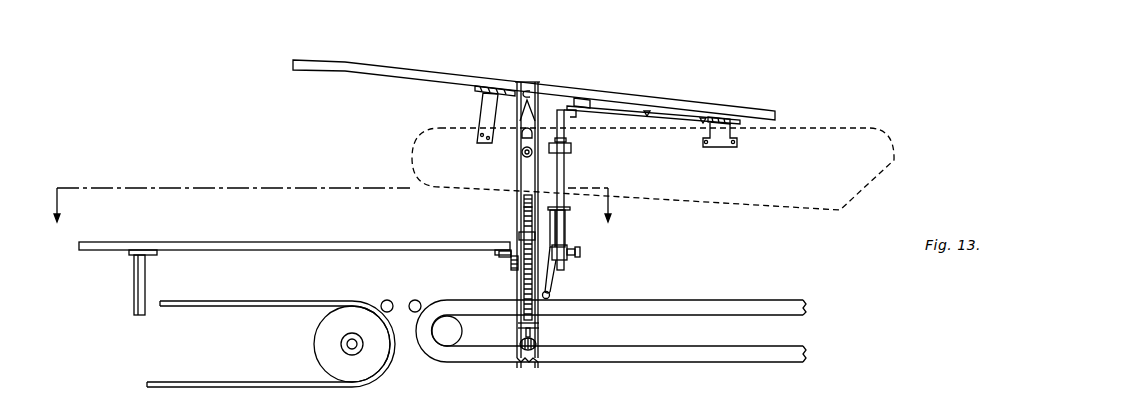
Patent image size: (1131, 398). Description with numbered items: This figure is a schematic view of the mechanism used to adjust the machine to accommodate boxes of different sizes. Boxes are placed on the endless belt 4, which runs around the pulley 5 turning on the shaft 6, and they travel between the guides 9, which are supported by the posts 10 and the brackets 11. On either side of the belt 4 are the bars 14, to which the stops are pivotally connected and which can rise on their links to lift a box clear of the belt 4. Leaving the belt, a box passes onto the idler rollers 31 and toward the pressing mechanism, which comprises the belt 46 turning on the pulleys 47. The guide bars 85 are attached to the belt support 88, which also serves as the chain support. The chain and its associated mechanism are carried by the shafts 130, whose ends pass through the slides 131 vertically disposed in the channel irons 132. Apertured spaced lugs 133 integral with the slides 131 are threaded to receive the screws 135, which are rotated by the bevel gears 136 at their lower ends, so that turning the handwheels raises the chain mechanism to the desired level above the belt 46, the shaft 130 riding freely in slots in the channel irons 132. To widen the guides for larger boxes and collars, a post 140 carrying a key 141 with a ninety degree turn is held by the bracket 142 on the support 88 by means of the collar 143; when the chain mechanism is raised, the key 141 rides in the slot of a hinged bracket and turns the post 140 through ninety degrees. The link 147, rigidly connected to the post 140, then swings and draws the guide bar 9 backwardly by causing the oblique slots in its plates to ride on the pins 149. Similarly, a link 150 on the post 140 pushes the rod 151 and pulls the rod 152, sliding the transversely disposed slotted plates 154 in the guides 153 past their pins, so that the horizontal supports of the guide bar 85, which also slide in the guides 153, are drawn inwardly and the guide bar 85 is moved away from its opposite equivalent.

The endless belt 4 is at (271, 301).
The pulley 5 is at (318, 338).
The shaft 6 is at (350, 352).
The guide 9 is at (235, 241).
The post 10 is at (133, 295).
The bracket 11 is at (509, 259).
The bar 14 is at (337, 215).
The idler roller 31 is at (412, 300).
The belt 46 is at (710, 306).
The pulley 47 is at (462, 331).
The guide bar 85 is at (677, 103).
The belt support 88 is at (886, 157).
The shaft 130 is at (521, 153).
The slide 131 is at (528, 173).
The channel iron 132 is at (528, 110).
The apertured spaced lug 133 is at (520, 233).
The screw 135 is at (523, 201).
The bevel gear 136 is at (537, 344).
The post 140 is at (566, 229).
The key 141 is at (570, 208).
The bracket 142 is at (571, 152).
The collar 143 is at (566, 140).
The link 147 is at (581, 251).
The pin 149 is at (139, 249).
The link 150 is at (576, 115).
The rod 151 is at (682, 122).
The rod 152 is at (580, 107).
The guide 153 is at (728, 117).
The plate 154 is at (740, 126).